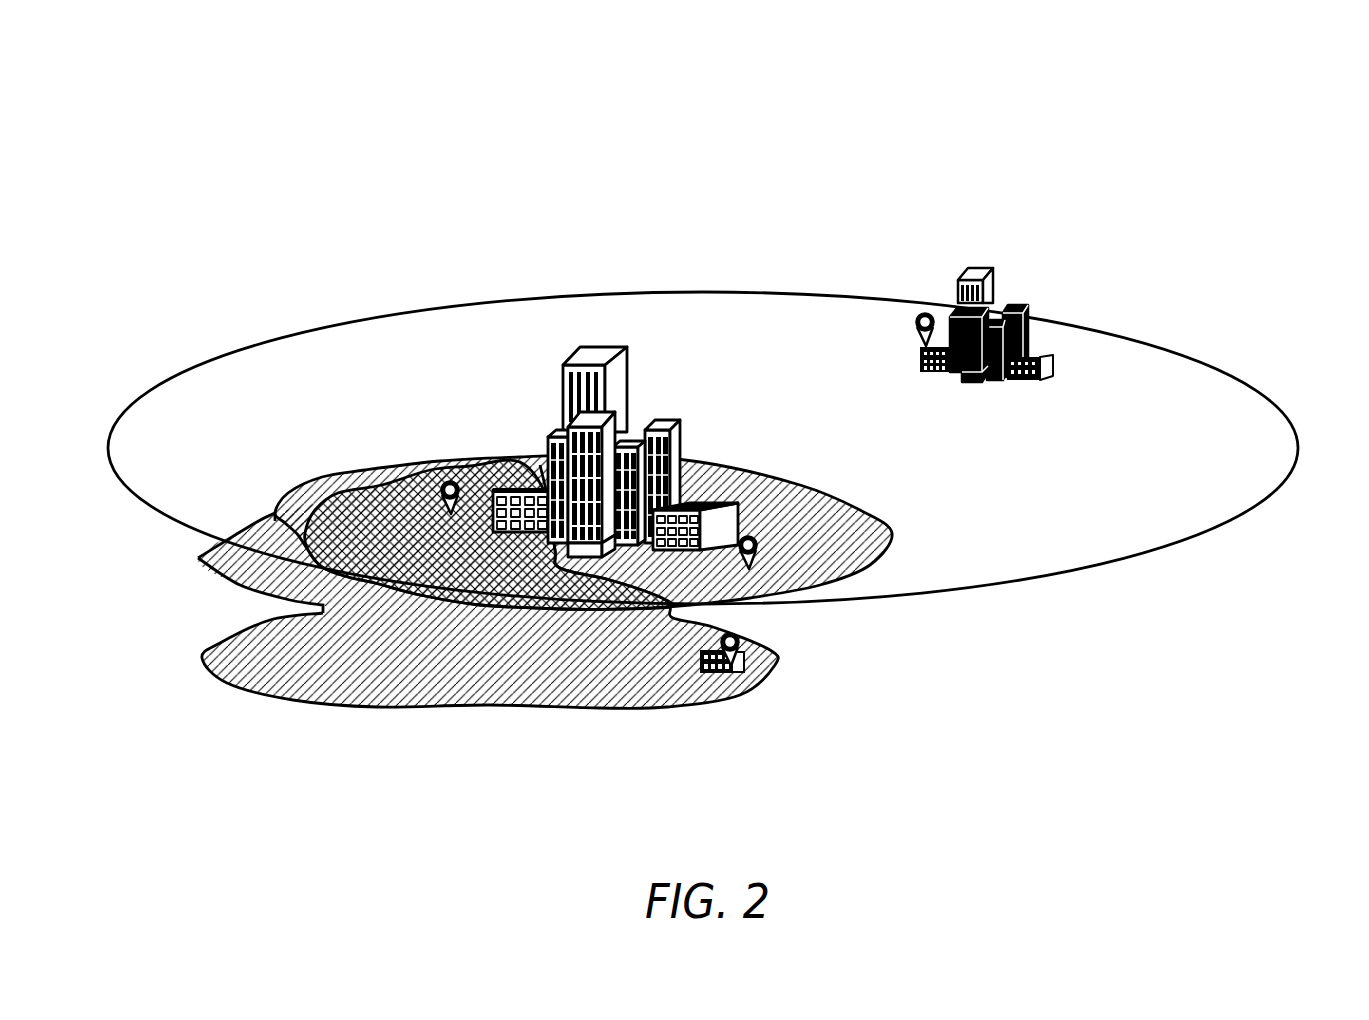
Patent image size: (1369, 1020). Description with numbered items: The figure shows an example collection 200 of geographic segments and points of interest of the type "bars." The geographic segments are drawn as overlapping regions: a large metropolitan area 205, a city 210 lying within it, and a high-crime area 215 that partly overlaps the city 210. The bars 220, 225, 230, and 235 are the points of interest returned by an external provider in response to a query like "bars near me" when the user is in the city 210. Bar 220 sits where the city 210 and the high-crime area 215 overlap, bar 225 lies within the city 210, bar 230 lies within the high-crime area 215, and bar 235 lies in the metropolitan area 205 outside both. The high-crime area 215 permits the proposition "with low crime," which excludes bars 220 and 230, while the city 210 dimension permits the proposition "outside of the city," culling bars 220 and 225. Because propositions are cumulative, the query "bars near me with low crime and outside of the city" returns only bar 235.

The collection 200 is at (1275, 56).
The metropolitan area 205 is at (297, 335).
The city 210 is at (895, 531).
The high-crime area 215 is at (202, 658).
The bar 220 is at (447, 480).
The bar 225 is at (755, 533).
The bar 230 is at (740, 634).
The bar 235 is at (920, 336).